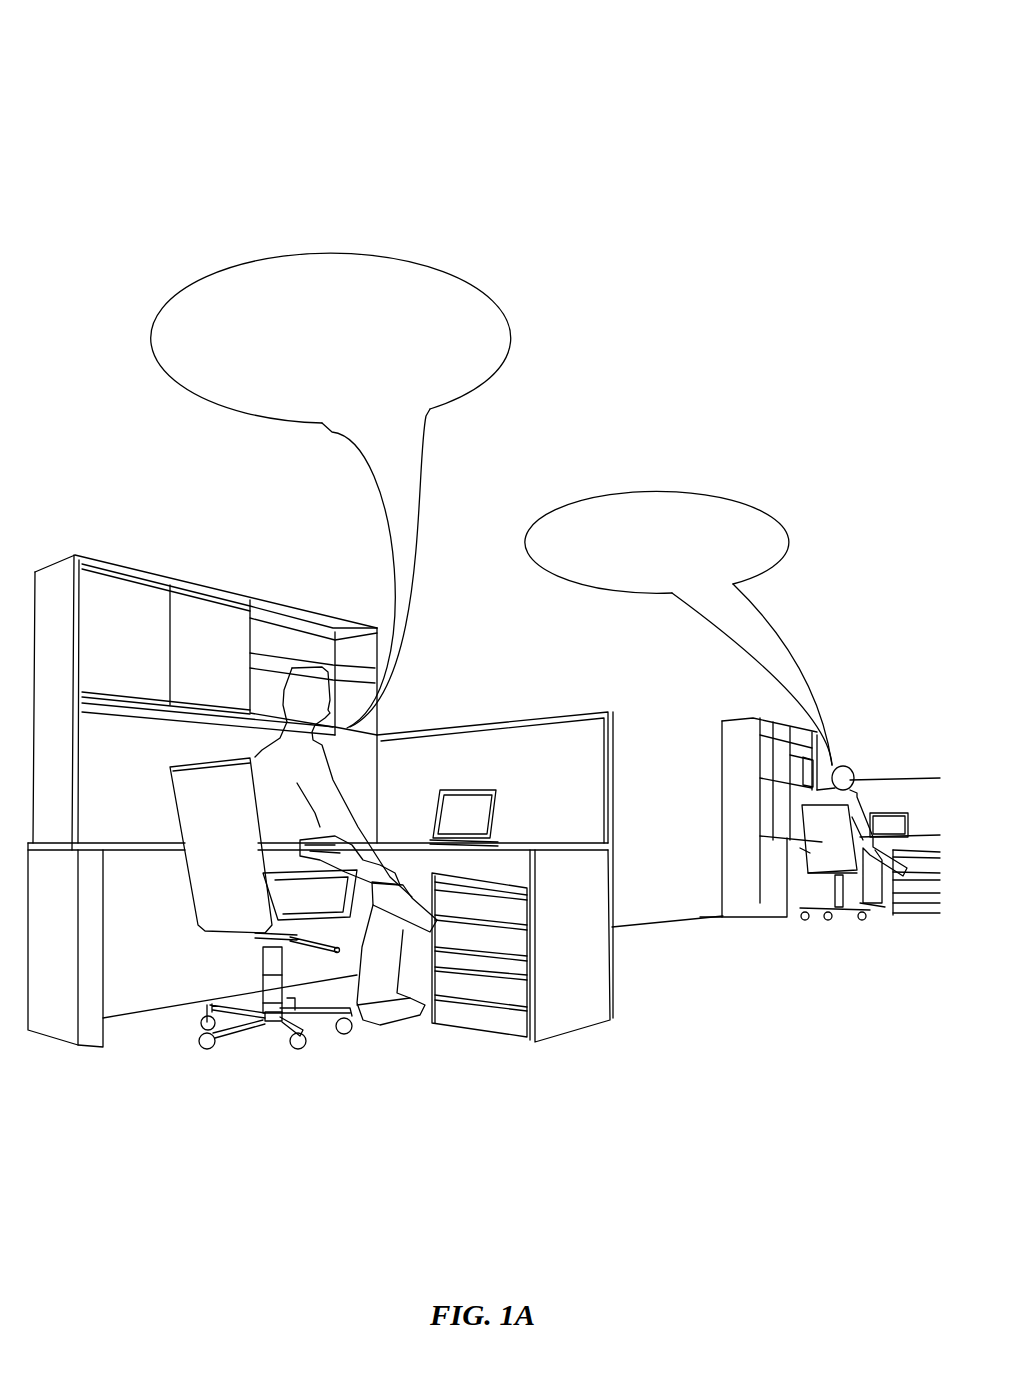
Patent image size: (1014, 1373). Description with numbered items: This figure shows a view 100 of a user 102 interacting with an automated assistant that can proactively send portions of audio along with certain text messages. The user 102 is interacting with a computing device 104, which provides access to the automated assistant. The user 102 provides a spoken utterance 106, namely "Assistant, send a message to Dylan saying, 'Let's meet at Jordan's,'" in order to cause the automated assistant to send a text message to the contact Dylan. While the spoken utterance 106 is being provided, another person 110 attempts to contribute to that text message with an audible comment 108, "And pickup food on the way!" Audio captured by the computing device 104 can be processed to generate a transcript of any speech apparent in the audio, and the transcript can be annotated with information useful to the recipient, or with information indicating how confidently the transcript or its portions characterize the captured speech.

The environment 100 is at (148, 58).
The user 102 is at (306, 773).
The computing device 104 is at (497, 789).
The spoken utterance 106 is at (213, 275).
The audible comment 108 is at (607, 492).
The another person 110 is at (845, 764).